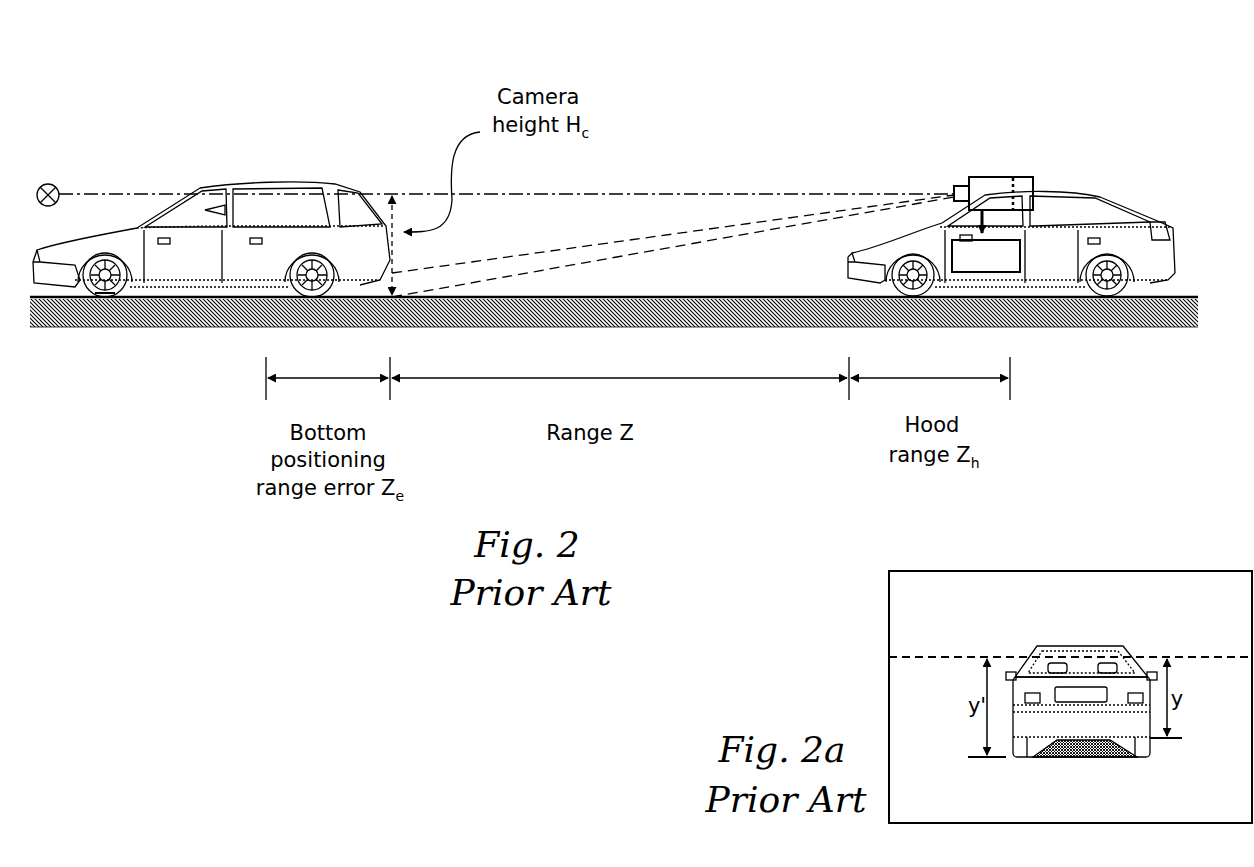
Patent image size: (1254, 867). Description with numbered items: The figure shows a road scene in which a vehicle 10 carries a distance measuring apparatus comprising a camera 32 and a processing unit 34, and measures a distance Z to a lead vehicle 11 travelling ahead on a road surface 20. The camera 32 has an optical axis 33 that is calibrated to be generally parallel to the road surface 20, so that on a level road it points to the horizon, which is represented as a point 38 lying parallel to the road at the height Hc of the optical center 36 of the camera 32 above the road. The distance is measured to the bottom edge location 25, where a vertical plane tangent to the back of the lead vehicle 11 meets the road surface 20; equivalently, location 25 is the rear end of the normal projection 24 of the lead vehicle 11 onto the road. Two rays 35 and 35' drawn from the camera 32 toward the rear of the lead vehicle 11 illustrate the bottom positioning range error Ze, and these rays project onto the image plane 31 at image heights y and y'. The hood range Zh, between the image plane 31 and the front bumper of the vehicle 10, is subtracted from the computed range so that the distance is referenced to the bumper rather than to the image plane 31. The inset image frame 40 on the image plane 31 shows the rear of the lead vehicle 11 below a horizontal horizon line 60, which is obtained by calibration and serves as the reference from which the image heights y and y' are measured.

In FIG. 2, the vehicle 10 is at (1130, 187).
In FIG. 2, the lead vehicle 11 is at (226, 173).
In FIG. 2, the road surface 20 is at (1168, 298).
In FIG. 2, the normal projection 24 is at (120, 298).
In FIG. 2, the bottom edge location 25 is at (392, 302).
In FIG. 2, the image plane 31 is at (1036, 192).
In FIG. 2, the camera 32 is at (992, 176).
In FIG. 2, the optical axis 33 is at (730, 194).
In FIG. 2, the processing unit 34 is at (988, 253).
In FIG. 2, the ray 35 is at (673, 234).
In FIG. 2, the ray 35' is at (673, 247).
In FIG. 2, the optical center 36 is at (950, 197).
In FIG. 2, the horizon point 38 is at (47, 184).
In FIG. 2A, the image frame 40 is at (1152, 560).
In FIG. 2A, the horizon image location 60 is at (1203, 657).